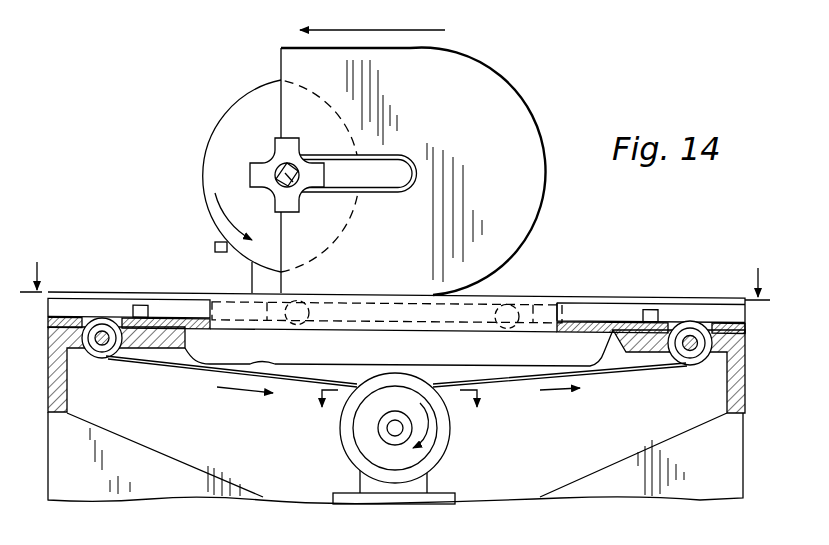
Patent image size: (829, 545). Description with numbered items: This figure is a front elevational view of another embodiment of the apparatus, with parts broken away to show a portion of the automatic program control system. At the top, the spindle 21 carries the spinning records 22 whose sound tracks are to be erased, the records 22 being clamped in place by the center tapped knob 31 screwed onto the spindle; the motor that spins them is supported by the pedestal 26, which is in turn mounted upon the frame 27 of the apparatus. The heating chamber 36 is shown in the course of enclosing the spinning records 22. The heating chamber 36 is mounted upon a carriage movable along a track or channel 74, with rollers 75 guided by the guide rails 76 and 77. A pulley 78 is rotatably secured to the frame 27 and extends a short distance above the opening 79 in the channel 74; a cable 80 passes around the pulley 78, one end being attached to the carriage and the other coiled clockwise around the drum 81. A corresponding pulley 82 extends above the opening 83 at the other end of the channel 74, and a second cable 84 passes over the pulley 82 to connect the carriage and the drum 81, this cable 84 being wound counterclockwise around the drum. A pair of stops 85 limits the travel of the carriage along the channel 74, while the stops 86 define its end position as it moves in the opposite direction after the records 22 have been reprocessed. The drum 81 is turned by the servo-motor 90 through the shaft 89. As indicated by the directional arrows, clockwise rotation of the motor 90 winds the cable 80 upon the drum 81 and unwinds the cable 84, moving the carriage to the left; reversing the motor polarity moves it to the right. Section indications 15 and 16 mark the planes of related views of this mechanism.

The section line 15 is at (396, 267).
The section line 16 is at (397, 397).
The spindle 21 is at (297, 208).
The records 22 is at (212, 130).
The pedestal 26 is at (263, 282).
The frame 27 is at (117, 493).
The center tapped knob 31 is at (294, 150).
The heating chamber 36 is at (508, 126).
The track or channel 74 is at (580, 307).
The rollers 75 is at (307, 302).
The guide rail 76 is at (70, 300).
The guide rail 77 is at (467, 315).
The pulley 78 is at (107, 353).
The opening 79 is at (122, 318).
The cable 80 is at (177, 371).
The drum 81 is at (427, 433).
The pulley 82 is at (697, 363).
The opening 83 is at (668, 350).
The second cable 84 is at (592, 380).
The stops 85 is at (143, 303).
The stops 86 is at (653, 304).
The shaft 89 is at (390, 429).
The servo-motor 90 is at (435, 458).